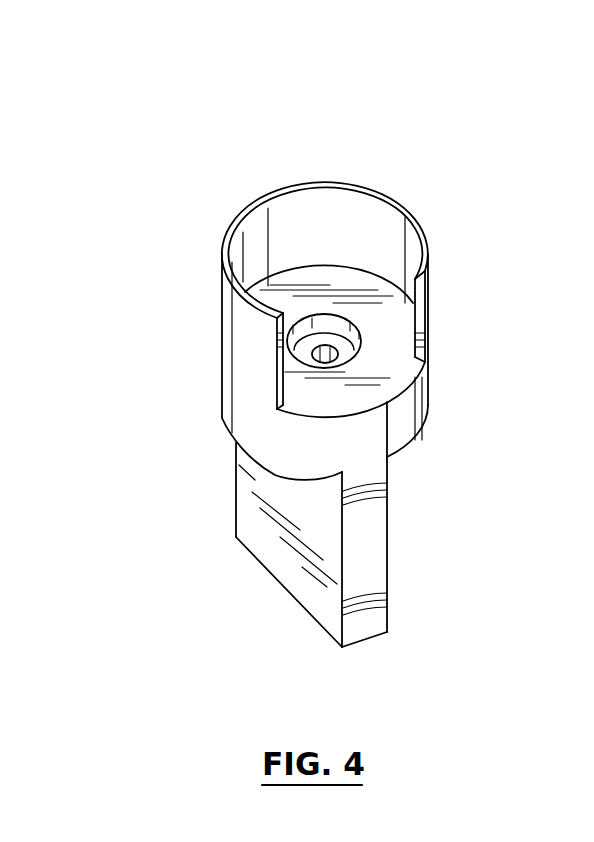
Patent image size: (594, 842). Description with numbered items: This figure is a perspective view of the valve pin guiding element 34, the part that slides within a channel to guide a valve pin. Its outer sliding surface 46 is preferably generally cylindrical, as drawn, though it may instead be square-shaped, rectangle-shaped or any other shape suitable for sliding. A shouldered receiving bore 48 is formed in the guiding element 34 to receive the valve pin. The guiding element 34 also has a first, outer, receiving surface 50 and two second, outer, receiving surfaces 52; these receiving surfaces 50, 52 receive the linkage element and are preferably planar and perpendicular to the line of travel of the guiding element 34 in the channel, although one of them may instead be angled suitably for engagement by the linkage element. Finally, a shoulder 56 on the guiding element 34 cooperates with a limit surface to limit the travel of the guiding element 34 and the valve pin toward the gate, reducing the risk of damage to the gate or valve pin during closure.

The valve pin guiding element 34 is at (317, 343).
The sliding surface 46 is at (243, 378).
The receiving bore 48 is at (335, 336).
The first outer receiving surface 50 is at (345, 393).
The second outer receiving surfaces 52 is at (270, 473).
The shoulder 56 is at (308, 610).